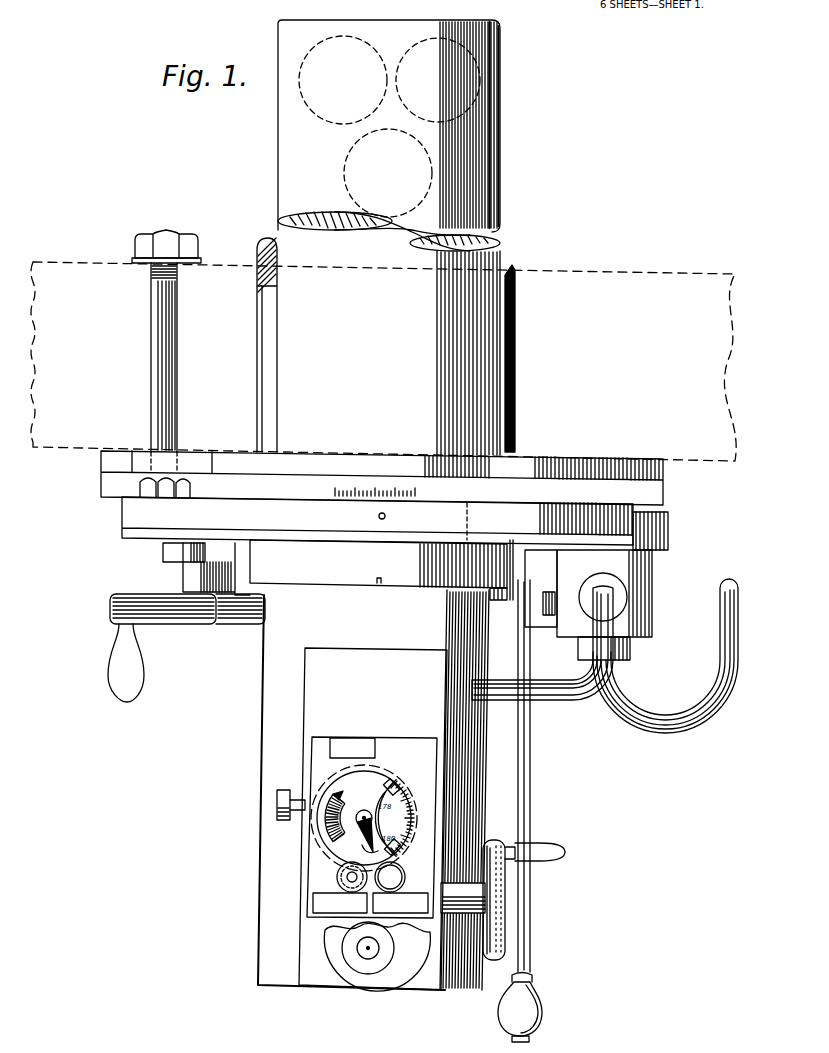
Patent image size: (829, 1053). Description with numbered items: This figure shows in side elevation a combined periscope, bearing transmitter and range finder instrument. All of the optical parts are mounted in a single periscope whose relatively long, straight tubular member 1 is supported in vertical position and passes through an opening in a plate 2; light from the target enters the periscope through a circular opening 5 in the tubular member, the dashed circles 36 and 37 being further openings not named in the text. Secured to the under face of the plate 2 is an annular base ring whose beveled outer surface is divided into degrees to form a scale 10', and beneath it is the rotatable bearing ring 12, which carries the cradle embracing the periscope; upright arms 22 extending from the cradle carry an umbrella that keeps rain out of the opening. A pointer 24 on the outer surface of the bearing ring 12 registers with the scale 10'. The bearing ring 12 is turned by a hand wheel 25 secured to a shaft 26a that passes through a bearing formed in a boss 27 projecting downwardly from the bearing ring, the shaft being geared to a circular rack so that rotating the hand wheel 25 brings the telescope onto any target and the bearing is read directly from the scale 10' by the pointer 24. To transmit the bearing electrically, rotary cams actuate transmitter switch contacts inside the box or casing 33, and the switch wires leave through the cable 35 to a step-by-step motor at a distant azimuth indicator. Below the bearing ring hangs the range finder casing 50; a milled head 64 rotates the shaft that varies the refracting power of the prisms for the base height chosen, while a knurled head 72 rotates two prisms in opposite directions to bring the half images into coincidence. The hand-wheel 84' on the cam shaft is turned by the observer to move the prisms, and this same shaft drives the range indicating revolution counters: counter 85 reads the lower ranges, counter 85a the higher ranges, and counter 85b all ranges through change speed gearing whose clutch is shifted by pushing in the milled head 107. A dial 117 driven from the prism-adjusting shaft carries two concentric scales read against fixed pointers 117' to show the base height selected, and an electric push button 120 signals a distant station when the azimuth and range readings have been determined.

The tubular member 1 is at (286, 180).
The plate 2 is at (75, 270).
The circular opening 5 is at (368, 158).
The scale 10' is at (401, 478).
The bearing ring 12 is at (122, 511).
The upright arms 22 is at (262, 262).
The pointer 24 is at (384, 508).
The hand wheel 25 is at (172, 626).
The shaft 26a is at (216, 626).
The boss 27 is at (190, 574).
The box or casing 33 is at (654, 586).
The cable 35 is at (686, 726).
The bore 36 is at (310, 92).
The bore 37 is at (468, 98).
The casing 50 is at (356, 660).
The milled head 64 is at (345, 878).
The milled or knurled head 72 is at (396, 870).
The hand-wheel 84' is at (528, 900).
The revolution counter 85 is at (322, 902).
The revolution counter 85a is at (414, 912).
The revolution counter 85b is at (330, 747).
The milled head 107 is at (277, 803).
The dial 117 is at (446, 811).
The fixed pointers 117' is at (283, 828).
The electric push button 120 is at (534, 1032).